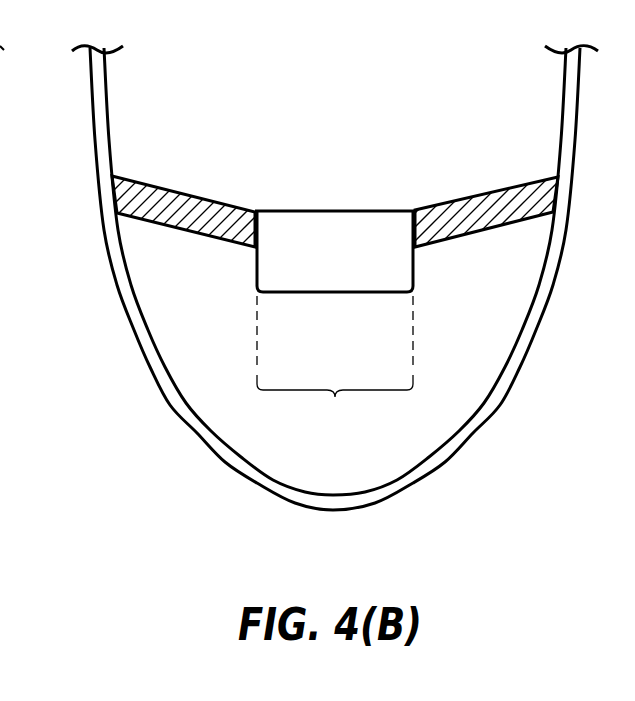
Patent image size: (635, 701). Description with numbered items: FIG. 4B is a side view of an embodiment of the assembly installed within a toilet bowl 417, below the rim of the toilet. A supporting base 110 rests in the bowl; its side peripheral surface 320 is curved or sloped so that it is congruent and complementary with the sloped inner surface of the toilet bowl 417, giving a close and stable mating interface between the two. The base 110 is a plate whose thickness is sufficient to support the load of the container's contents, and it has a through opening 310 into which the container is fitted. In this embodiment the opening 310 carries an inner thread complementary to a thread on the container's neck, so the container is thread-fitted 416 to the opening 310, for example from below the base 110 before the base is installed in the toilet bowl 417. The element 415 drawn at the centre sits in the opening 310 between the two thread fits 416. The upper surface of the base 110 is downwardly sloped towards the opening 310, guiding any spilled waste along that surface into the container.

The supporting base 110 is at (173, 207).
The through opening 310 is at (335, 362).
The side peripheral surface 320 is at (104, 195).
The light emitting element 415 is at (316, 270).
The thread fit 416 is at (242, 233).
The toilet bowl 417 is at (130, 277).